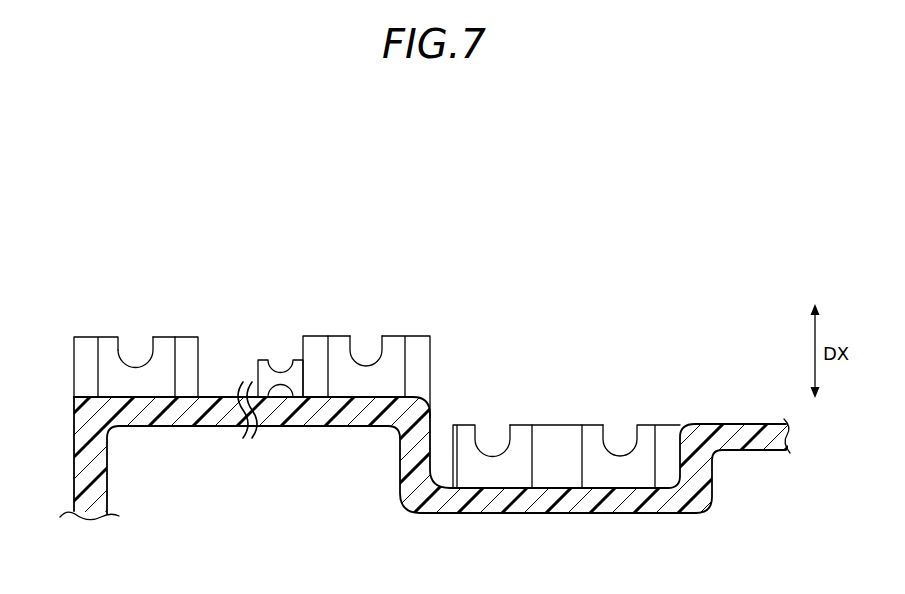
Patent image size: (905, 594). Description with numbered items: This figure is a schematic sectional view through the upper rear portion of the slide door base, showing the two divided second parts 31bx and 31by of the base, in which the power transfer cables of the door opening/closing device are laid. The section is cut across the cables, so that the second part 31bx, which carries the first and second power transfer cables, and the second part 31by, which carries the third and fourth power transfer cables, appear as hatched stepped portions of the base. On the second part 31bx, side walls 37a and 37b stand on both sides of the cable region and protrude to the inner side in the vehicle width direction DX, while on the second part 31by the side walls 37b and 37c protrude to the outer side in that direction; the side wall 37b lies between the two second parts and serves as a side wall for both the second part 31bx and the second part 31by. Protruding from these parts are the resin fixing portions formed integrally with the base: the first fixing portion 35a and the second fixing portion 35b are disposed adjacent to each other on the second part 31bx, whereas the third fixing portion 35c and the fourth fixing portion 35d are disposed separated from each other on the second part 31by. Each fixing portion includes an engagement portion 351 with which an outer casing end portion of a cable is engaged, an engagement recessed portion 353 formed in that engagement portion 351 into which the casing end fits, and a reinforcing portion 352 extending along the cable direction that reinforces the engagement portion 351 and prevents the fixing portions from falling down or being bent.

The fourth fixing portion 35d is at (112, 336).
The engagement recessed portion 353 is at (140, 347).
The engagement portion 351 is at (160, 337).
The reinforcing portion 352 is at (190, 352).
The third fixing portion 35c is at (340, 335).
The second fixing portion 35b is at (493, 473).
The first fixing portion 35a is at (615, 473).
The side wall 37a is at (690, 440).
The side wall 37b is at (433, 447).
The side wall 37c is at (82, 465).
The second part 31by is at (312, 418).
The second part 31bx is at (657, 503).